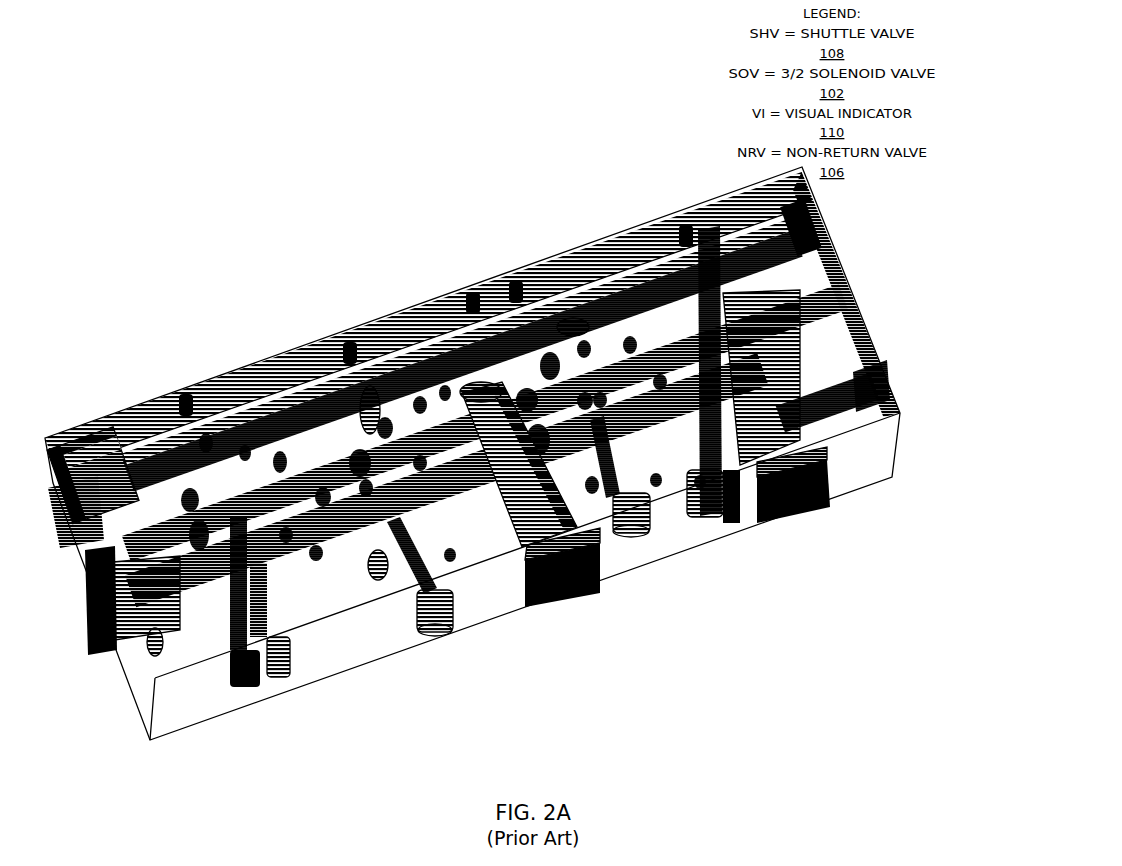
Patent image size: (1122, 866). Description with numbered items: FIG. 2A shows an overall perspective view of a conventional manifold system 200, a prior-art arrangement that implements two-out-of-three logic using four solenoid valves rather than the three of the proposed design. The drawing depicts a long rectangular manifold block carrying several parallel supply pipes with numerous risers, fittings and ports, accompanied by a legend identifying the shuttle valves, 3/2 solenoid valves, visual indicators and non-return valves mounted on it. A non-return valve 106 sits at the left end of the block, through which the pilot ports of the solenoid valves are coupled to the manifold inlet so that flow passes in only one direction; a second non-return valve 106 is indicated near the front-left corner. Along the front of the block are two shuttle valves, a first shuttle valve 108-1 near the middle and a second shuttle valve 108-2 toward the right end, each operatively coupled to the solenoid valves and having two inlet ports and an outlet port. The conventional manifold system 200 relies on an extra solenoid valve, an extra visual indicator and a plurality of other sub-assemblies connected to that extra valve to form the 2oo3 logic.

The conventional manifold system 200 is at (100, 165).
The non-return valve 106 is at (100, 418).
The first shuttle valve 108-1 is at (573, 598).
The second shuttle valve 108-2 is at (790, 518).